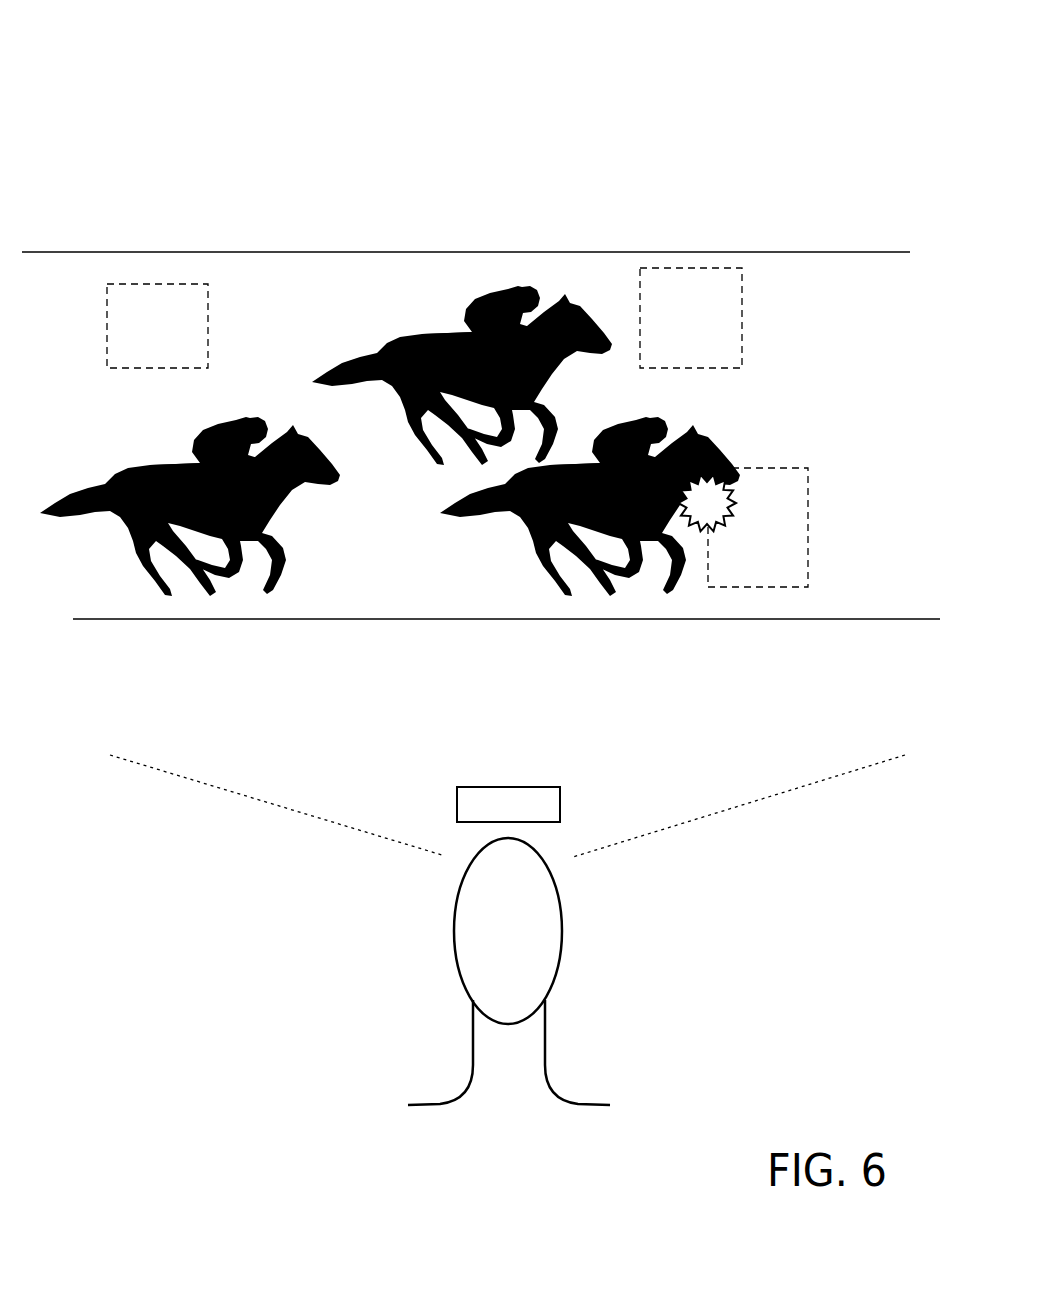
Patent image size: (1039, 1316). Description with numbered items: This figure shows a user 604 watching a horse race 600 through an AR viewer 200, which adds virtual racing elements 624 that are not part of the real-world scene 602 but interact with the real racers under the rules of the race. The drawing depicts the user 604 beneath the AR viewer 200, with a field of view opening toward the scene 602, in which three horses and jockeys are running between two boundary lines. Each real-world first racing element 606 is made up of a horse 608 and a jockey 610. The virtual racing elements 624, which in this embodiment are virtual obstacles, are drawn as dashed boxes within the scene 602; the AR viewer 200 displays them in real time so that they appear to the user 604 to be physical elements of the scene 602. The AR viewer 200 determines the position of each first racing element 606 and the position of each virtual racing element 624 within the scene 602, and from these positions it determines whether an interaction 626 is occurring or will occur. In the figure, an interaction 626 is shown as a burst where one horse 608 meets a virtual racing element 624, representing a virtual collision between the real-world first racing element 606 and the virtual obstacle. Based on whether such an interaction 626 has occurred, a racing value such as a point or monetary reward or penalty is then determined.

The horse race 600 is at (147, 50).
The scene 602 is at (507, 806).
The user 604 is at (438, 942).
The first racing element 606 is at (103, 480).
The horse 608 is at (117, 451).
The jockey 610 is at (188, 433).
The virtual racing element 624 is at (125, 278).
The interaction 626 is at (740, 497).
The AR viewer 200 is at (508, 804).